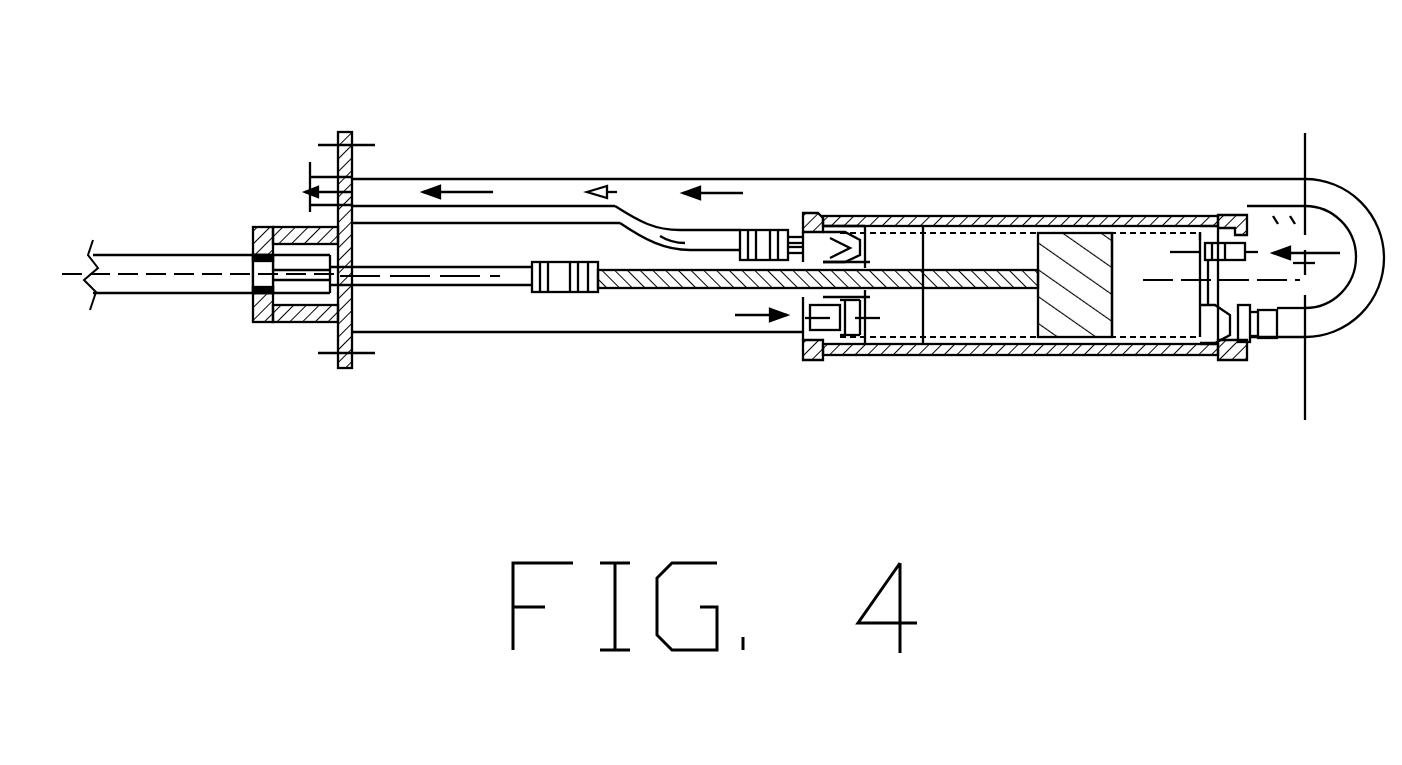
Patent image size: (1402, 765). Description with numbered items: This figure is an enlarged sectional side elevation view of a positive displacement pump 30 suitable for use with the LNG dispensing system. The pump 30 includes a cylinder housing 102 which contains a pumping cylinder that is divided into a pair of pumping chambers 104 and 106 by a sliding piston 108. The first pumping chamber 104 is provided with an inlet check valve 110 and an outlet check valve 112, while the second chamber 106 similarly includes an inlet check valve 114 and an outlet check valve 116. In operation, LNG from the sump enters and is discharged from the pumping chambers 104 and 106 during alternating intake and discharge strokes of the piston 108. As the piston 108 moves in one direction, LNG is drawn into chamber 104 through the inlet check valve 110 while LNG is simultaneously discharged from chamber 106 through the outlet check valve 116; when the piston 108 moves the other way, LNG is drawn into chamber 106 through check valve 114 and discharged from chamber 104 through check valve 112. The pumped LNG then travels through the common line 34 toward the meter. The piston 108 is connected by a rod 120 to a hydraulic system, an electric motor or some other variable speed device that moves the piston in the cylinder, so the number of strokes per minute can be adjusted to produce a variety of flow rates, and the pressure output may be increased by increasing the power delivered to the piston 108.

The positive displacement pump 30 is at (713, 130).
The common line 34 is at (950, 178).
The cylinder housing 102 is at (928, 347).
The pumping chamber 104 is at (903, 310).
The pumping chamber 106 is at (1143, 267).
The sliding piston 108 is at (1053, 347).
The inlet check valve 110 is at (800, 320).
The outlet check valve 112 is at (833, 214).
The inlet check valve 114 is at (1206, 240).
The outlet check valve 116 is at (1207, 360).
The rod 120 is at (417, 275).